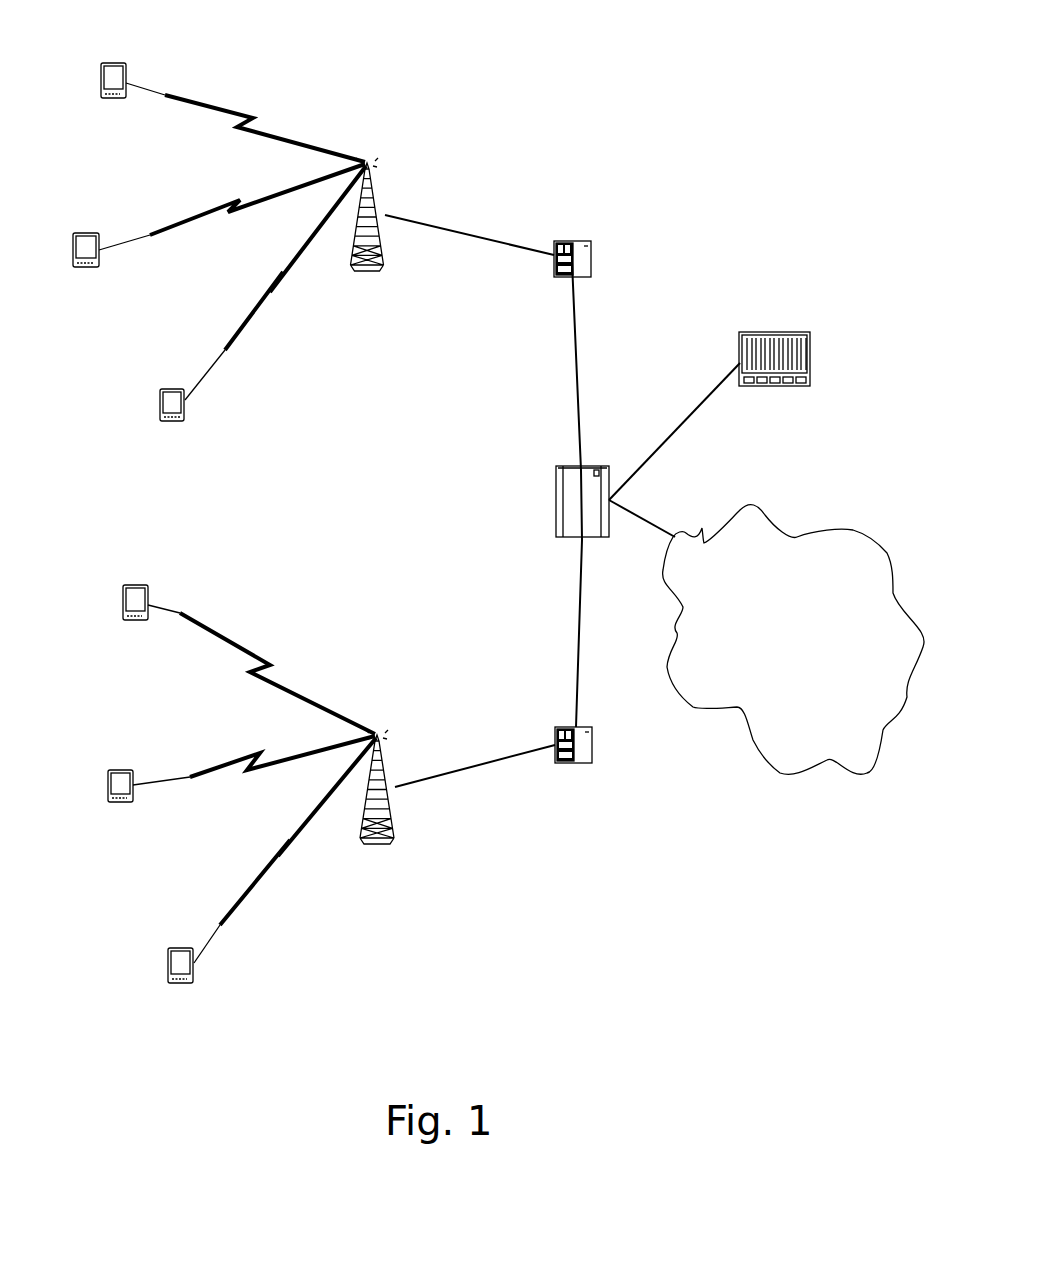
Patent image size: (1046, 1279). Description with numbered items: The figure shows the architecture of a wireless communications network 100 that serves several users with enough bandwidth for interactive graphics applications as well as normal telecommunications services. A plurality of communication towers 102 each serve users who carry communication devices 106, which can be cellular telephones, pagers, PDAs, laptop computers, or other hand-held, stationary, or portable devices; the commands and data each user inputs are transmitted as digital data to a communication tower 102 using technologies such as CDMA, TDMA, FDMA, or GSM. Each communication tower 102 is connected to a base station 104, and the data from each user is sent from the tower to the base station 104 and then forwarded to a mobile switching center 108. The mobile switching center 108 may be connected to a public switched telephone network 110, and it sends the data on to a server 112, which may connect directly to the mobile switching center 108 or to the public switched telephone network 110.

The wireless communications network 100 is at (598, 88).
The communication tower 102 is at (371, 162).
The base station 104 is at (573, 240).
The communication device 106 is at (113, 63).
The mobile switching center 108 is at (556, 500).
The public switched telephone network 110 is at (798, 537).
The server 112 is at (757, 332).